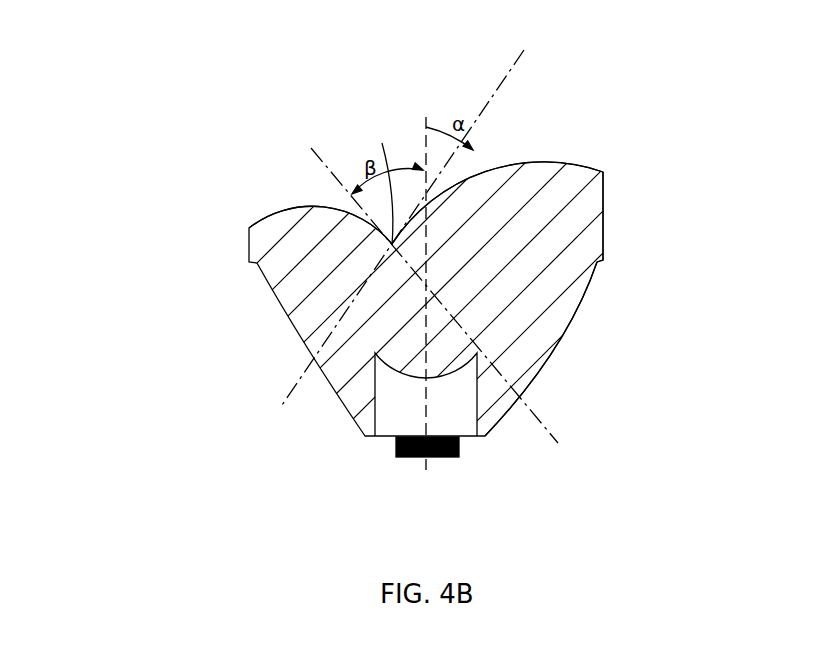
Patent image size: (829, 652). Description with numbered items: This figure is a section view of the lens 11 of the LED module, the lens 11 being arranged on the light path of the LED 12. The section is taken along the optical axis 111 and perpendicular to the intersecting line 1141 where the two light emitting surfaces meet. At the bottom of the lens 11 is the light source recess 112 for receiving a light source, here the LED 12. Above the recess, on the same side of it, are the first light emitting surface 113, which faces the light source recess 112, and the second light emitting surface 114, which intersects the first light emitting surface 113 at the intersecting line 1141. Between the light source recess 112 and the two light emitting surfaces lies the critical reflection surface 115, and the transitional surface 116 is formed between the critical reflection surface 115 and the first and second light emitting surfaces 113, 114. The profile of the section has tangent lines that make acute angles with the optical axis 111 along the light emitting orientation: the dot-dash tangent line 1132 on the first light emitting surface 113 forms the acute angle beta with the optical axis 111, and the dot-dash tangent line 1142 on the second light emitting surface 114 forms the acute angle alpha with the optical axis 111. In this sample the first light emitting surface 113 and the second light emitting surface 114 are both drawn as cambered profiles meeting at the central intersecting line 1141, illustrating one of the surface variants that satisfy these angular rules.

The lens 11 is at (247, 217).
The optical axis 111 is at (428, 123).
The light source recess 112 is at (468, 440).
The first light emitting surface 113 is at (295, 207).
The second light emitting surface 114 is at (578, 163).
The critical reflection surface 115 is at (574, 310).
The transitional surface 116 is at (608, 182).
The tangent line 1132 is at (518, 65).
The intersecting line 1141 is at (424, 128).
The tangent line 1142 is at (324, 167).
The LED 12 is at (443, 423).